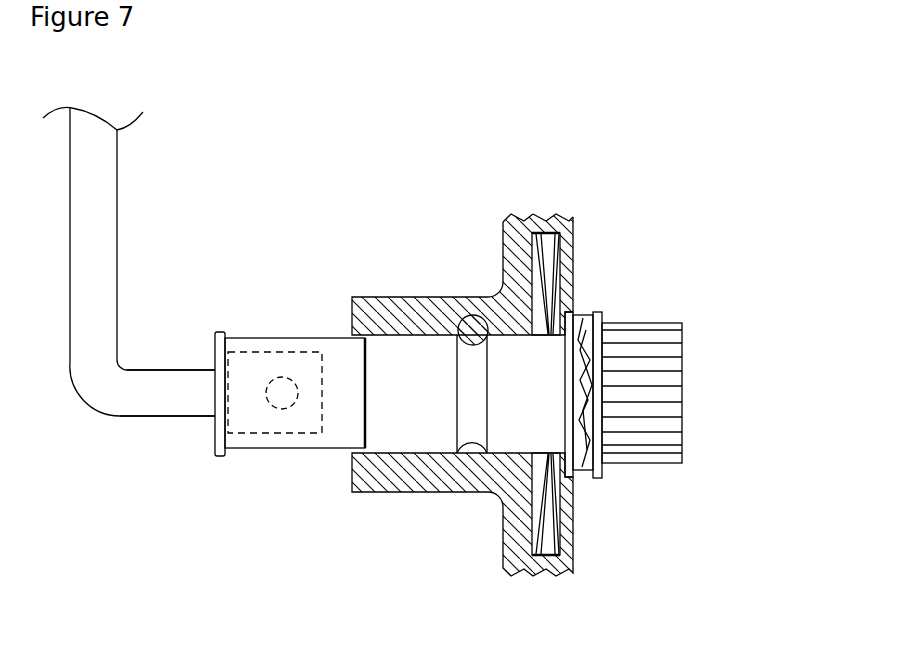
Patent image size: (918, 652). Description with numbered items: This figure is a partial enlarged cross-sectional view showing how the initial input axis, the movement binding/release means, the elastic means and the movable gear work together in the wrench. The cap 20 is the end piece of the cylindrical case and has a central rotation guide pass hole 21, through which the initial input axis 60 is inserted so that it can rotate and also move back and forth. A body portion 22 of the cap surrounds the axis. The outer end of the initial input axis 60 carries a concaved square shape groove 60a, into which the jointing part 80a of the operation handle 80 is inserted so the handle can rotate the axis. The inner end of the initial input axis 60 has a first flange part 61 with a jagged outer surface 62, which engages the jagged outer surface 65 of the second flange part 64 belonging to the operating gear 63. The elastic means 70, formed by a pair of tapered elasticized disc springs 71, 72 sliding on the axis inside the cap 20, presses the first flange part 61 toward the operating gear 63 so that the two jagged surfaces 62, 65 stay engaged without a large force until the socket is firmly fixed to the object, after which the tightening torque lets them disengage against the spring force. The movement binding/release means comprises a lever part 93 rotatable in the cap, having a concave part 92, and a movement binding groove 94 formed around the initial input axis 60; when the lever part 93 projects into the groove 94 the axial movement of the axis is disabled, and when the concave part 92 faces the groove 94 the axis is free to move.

The cap 20 is at (535, 208).
The rotation guide pass hole 21 is at (528, 480).
The body 22 is at (416, 480).
The initial input axis 60 is at (282, 334).
The concaved square shape groove 60a is at (310, 354).
The first flange part 61 is at (580, 297).
The jagged outer surface 62 is at (598, 418).
The operating gear 63 is at (682, 338).
The second flange part 64 is at (598, 480).
The jagged outer surface 65 is at (585, 392).
The elastic means 70 is at (574, 255).
The disc spring 71 is at (524, 218).
The disc spring 72 is at (554, 224).
The operation handle 80 is at (133, 194).
The jointing part 80a is at (257, 422).
The concave part 92 is at (437, 327).
The lever part 93 is at (480, 318).
The movement binding groove 94 is at (470, 456).